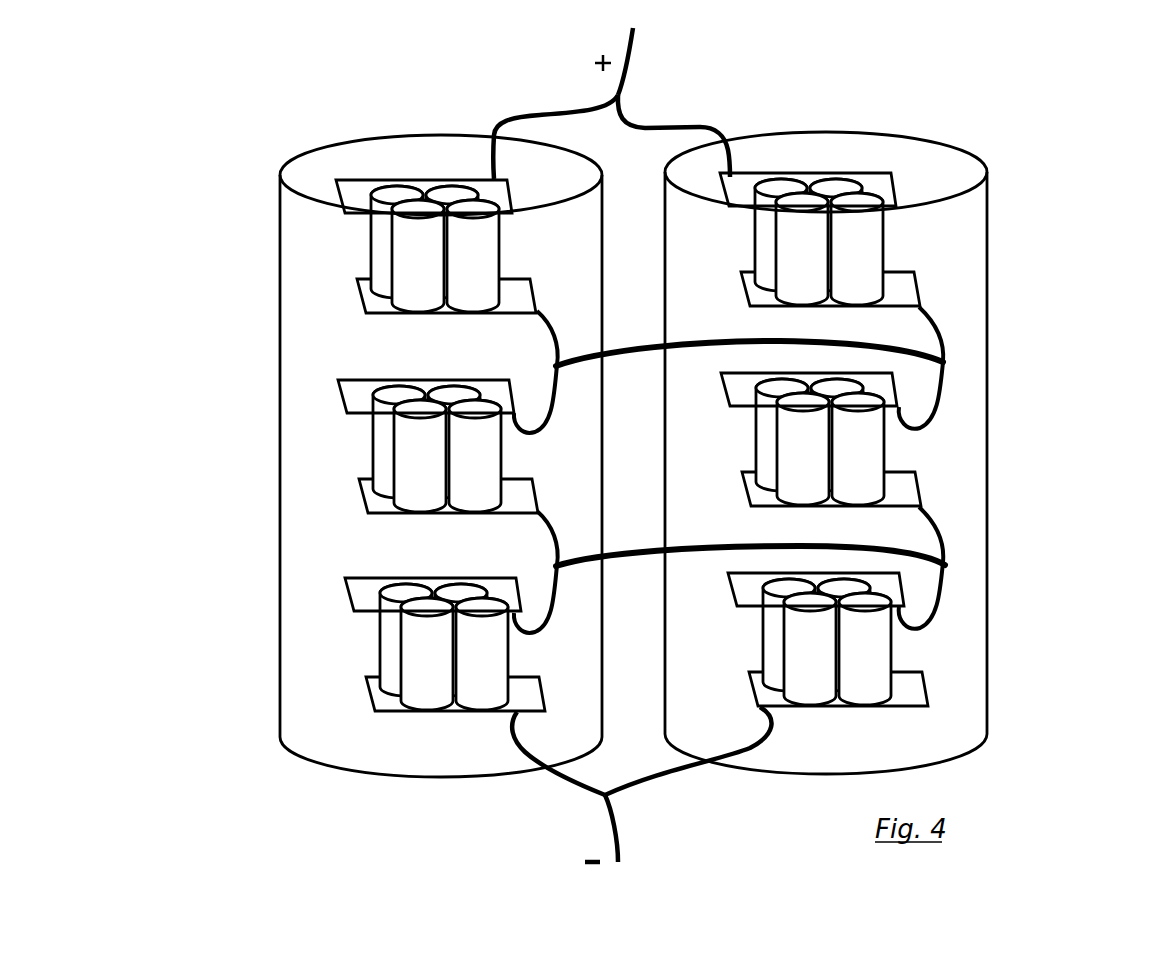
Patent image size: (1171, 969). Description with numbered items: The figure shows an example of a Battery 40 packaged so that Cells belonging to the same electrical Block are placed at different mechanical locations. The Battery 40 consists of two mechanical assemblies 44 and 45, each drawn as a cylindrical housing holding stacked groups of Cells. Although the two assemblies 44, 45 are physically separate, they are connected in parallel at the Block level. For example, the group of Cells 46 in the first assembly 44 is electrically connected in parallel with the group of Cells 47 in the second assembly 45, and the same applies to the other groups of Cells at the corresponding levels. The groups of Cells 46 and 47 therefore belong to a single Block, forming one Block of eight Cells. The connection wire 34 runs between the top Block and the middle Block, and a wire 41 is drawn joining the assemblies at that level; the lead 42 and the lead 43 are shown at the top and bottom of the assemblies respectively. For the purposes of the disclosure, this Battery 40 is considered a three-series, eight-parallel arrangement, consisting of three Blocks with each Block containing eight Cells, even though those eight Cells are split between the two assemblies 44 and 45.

The Battery 40 is at (229, 82).
The positive terminal lead 42 is at (640, 73).
The negative terminal lead 43 is at (623, 850).
The mechanical assembly 44 is at (272, 567).
The mechanical assembly 45 is at (1000, 600).
The group of Cells 46 is at (347, 438).
The group of Cells 47 is at (902, 450).
The connection wire 34 is at (937, 305).
The series connection bus wire 41 is at (912, 343).